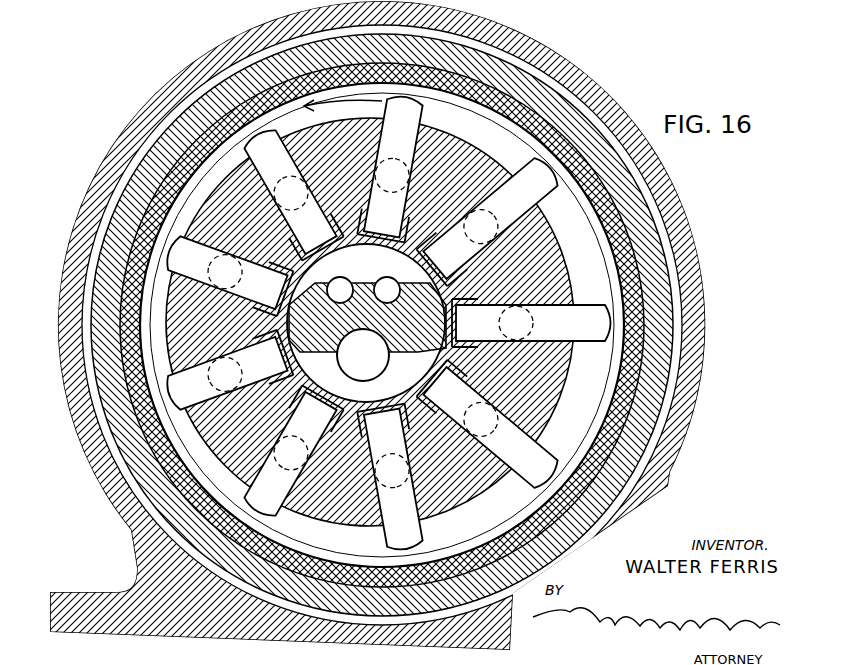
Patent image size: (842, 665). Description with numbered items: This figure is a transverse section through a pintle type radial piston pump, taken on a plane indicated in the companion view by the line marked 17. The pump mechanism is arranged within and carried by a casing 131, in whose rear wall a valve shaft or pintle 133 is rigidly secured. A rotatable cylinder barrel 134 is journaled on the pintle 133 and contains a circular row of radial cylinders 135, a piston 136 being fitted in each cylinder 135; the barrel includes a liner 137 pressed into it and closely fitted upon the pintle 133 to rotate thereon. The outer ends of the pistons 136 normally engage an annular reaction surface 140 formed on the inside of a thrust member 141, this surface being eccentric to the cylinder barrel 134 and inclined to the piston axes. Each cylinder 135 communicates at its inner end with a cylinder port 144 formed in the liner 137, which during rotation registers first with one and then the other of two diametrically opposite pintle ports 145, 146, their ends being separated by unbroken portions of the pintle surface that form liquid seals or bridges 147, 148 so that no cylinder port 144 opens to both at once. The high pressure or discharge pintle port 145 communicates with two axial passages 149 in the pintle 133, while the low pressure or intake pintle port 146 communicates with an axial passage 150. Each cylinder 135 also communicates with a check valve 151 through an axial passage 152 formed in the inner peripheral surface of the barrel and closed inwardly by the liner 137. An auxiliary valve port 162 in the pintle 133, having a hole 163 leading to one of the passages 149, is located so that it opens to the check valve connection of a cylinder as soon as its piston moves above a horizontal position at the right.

The section line 17- 17 is at (38, 310).
The casing 131 is at (162, 98).
The valve shaft or pintle 133 is at (320, 327).
The cylinder barrel 134 is at (541, 233).
The radial cylinders 135 is at (293, 147).
The piston 136 is at (395, 113).
The liner 137 is at (432, 359).
The annular reaction surface 140 is at (612, 372).
The thrust member 141 is at (632, 203).
The cylinder port 144 is at (377, 329).
The pintle port 145 is at (345, 188).
The pintle port 146 is at (263, 401).
The liquid seal or bridge 147 is at (276, 324).
The liquid seal or bridge 148 is at (456, 297).
The passages 149 is at (344, 287).
The passage 150 is at (352, 364).
The check valve 151 is at (263, 205).
The axial passage 152 is at (368, 323).
The auxiliary valve port 162 is at (412, 329).
The hole 163 is at (397, 313).